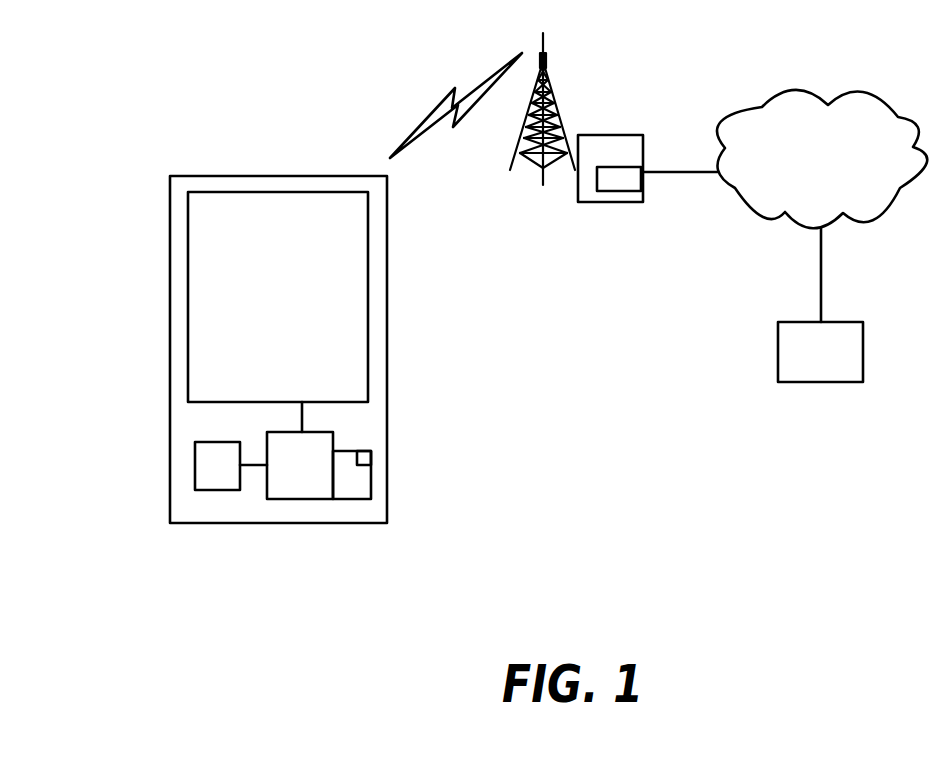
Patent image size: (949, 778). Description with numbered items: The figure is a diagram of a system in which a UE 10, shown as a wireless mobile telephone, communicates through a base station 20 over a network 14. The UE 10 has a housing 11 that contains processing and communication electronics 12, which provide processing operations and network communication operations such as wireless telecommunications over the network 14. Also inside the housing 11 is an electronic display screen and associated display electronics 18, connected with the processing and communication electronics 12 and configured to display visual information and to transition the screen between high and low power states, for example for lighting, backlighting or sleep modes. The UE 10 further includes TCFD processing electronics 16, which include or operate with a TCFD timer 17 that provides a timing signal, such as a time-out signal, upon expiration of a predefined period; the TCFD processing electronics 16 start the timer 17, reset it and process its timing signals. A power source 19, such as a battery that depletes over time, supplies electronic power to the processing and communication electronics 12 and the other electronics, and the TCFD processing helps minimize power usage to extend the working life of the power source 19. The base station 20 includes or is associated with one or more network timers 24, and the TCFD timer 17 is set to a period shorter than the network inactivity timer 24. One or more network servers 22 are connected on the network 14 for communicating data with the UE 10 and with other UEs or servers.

The UE 10 is at (206, 150).
The housing 11 is at (283, 523).
The processing and communication electronics 12 is at (314, 476).
The network 14 is at (834, 173).
The TCFD processing electronics 16 is at (348, 490).
The TCFD timer 17 is at (365, 457).
The display screen and associated display electronics 18 is at (291, 306).
The power source 19 is at (217, 478).
The base station 20 is at (608, 202).
The network server 22 is at (863, 352).
The network timer 24 is at (626, 186).